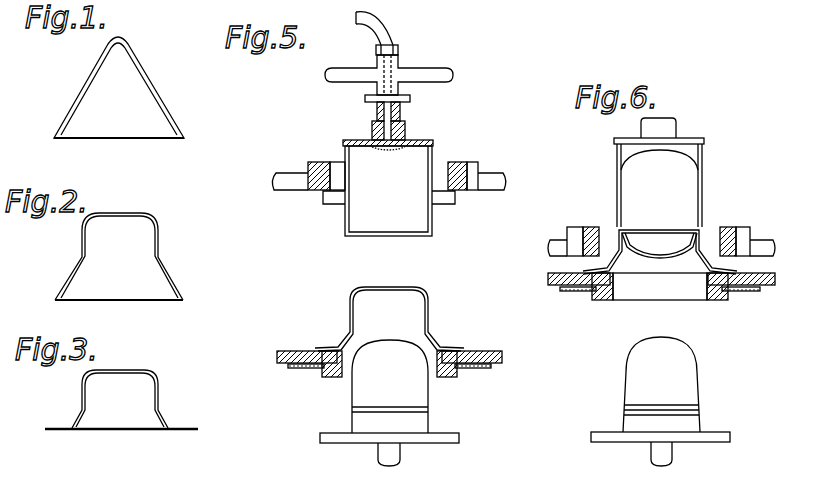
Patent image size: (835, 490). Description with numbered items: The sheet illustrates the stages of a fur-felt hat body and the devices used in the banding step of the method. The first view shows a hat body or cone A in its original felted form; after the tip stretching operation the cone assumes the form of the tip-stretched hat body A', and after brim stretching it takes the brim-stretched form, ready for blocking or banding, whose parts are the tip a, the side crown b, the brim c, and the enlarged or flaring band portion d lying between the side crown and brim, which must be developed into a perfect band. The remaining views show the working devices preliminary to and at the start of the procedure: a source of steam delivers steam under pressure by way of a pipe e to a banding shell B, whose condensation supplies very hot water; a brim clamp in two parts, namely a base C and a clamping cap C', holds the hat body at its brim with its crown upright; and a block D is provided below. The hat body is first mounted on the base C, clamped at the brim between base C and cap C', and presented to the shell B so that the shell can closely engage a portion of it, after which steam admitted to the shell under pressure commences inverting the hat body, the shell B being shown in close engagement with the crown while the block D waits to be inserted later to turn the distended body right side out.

In FIG. 1, the hat body or cone A is at (119, 87).
In FIG. 2, the tip-stretched hat body A' is at (119, 256).
In FIG. 3, the tip a is at (120, 370).
In FIG. 3, the side crown b is at (162, 394).
In FIG. 3, the flaring band portion d is at (165, 420).
In FIG. 3, the brim c is at (190, 430).
In FIG. 5, the steam pipe e is at (381, 26).
In FIG. 5, the banding shell B is at (389, 140).
In FIG. 6, the banding shell B is at (659, 172).
In FIG. 5, the clamping cap C' is at (389, 164).
In FIG. 6, the clamping cap C' is at (661, 226).
In FIG. 5, the clamp base C is at (387, 347).
In FIG. 6, the clamp base C is at (641, 287).
In FIG. 5, the hat block D is at (389, 403).
In FIG. 6, the hat block D is at (660, 401).